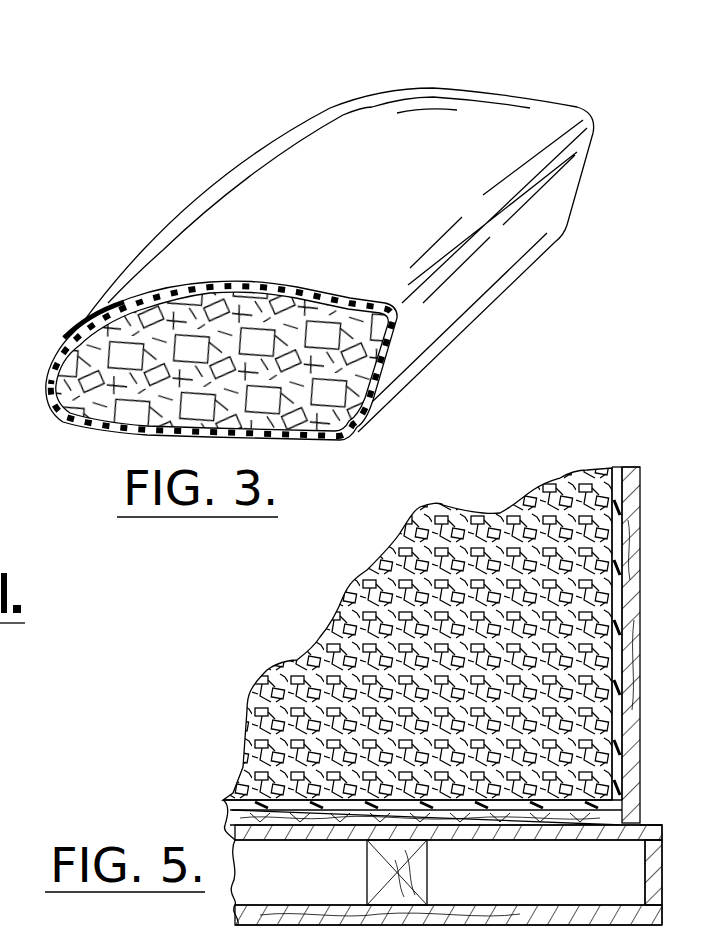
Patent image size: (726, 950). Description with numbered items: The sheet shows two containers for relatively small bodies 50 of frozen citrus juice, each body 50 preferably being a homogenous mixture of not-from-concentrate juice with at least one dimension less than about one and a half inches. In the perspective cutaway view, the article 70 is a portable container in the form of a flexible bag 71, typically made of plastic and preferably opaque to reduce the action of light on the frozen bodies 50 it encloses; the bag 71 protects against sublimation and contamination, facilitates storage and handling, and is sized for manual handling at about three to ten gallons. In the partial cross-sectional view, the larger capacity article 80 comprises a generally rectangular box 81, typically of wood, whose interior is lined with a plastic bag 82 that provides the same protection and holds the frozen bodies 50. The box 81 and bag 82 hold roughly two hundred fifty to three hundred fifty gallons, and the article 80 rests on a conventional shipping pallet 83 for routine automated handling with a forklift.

In FIG. 3, the bodies of frozen citrus juice 50 is at (135, 422).
In FIG. 5, the bodies of frozen citrus juice 50 is at (587, 473).
In FIG. 3, the article 70 is at (397, 77).
In FIG. 3, the flexible bag 71 is at (402, 383).
In FIG. 5, the article 80 is at (661, 541).
In FIG. 5, the box 81 is at (640, 672).
In FIG. 5, the plastic bag 82 is at (617, 623).
In FIG. 5, the shipping pallet 83 is at (658, 867).